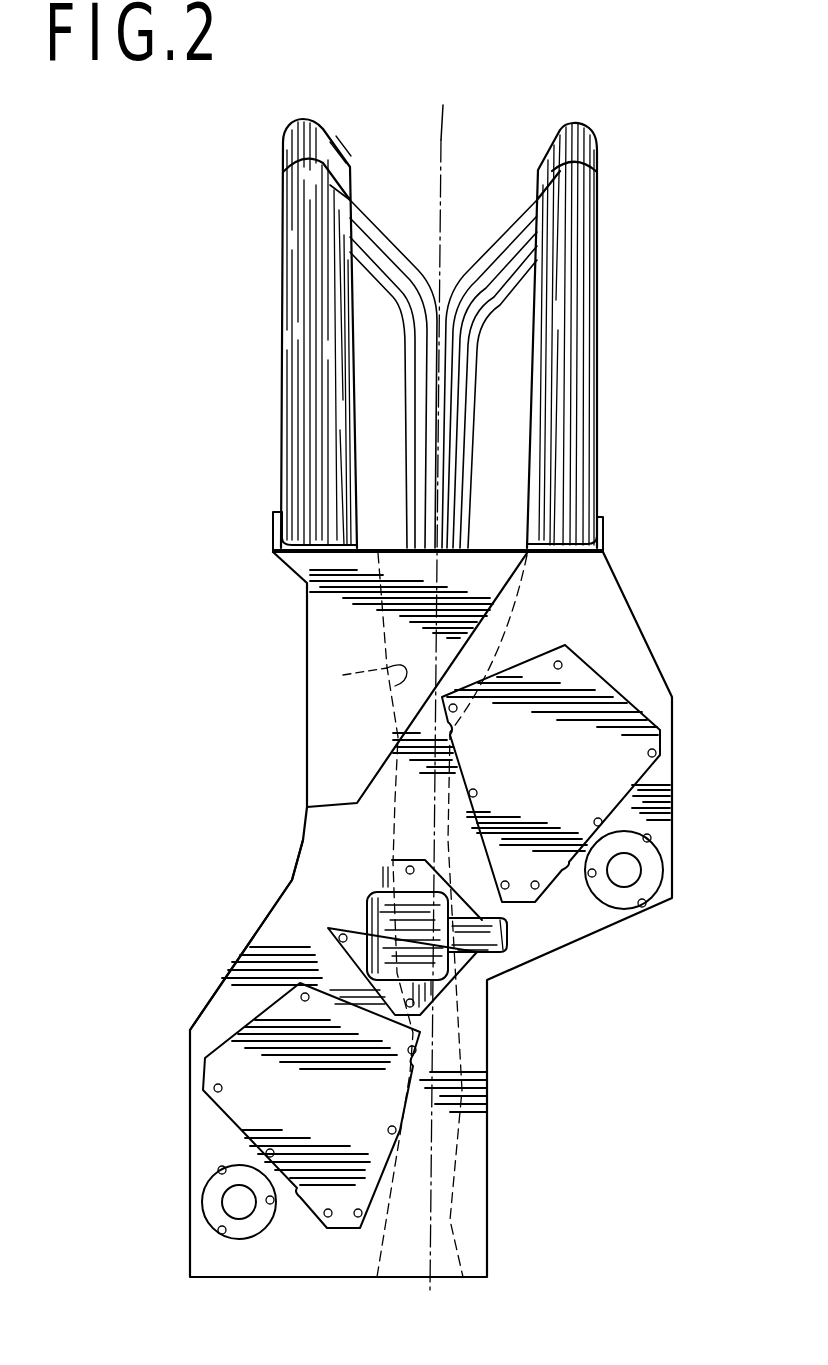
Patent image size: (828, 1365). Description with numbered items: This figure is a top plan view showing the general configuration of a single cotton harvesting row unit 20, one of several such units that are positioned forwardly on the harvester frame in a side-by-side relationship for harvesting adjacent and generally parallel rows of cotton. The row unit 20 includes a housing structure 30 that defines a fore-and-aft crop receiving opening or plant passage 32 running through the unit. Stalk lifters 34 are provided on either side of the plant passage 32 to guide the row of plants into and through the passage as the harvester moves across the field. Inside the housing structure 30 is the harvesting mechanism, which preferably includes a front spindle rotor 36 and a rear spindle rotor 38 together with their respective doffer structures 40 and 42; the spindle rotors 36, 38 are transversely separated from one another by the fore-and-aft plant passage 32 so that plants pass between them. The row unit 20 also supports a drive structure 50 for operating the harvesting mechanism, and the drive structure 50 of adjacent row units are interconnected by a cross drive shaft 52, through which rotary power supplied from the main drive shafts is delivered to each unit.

The cotton harvesting row unit 20 is at (302, 790).
The housing structure 30 is at (322, 863).
The plant passage 32 is at (364, 666).
The stalk lifters 34 is at (544, 167).
The front spindle rotor 36 is at (562, 778).
The rear spindle rotor 38 is at (332, 1115).
The doffer structure 40 is at (647, 882).
The doffer structure 42 is at (215, 1214).
The drive structure 50 is at (393, 938).
The cross drive shaft 52 is at (490, 950).